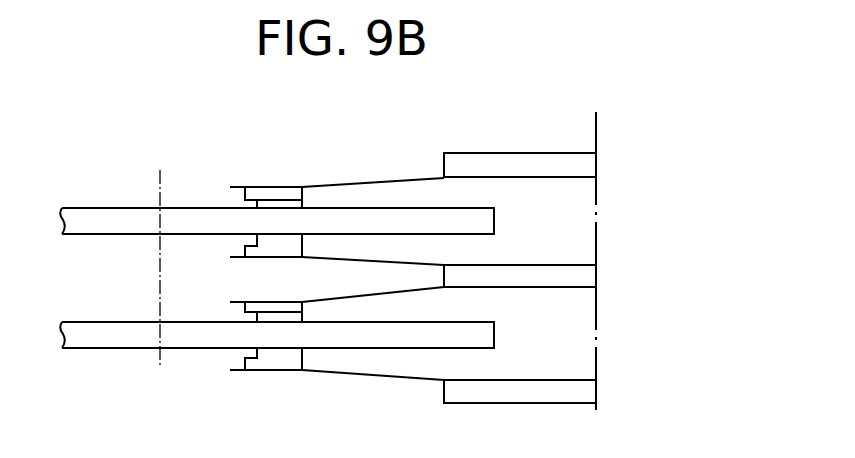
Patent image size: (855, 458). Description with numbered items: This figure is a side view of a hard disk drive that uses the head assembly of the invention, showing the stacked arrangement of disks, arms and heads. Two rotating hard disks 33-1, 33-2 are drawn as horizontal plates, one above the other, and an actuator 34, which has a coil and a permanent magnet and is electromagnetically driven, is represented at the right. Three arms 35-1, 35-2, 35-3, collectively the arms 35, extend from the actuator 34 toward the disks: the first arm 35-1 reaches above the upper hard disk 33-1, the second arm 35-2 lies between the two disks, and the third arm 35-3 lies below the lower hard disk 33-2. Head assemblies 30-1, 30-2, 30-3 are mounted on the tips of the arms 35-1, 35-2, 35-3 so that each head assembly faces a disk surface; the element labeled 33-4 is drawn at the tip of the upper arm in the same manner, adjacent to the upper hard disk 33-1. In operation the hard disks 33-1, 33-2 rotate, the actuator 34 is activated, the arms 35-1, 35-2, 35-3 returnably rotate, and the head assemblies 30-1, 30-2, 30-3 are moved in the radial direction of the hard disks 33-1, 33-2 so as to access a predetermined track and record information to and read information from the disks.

The actuator 34 is at (585, 170).
The arms 35 is at (449, 238).
The arm 35-1 is at (470, 153).
The arm 35-2 is at (522, 265).
The arm 35-3 is at (522, 380).
The hard disk 33-1 is at (95, 208).
The hard disk 33-2 is at (97, 348).
The holding member 33-4 is at (261, 176).
The head assembly 30-1 is at (283, 361).
The head assembly 30-2 is at (262, 299).
The head assembly 30-3 is at (262, 260).